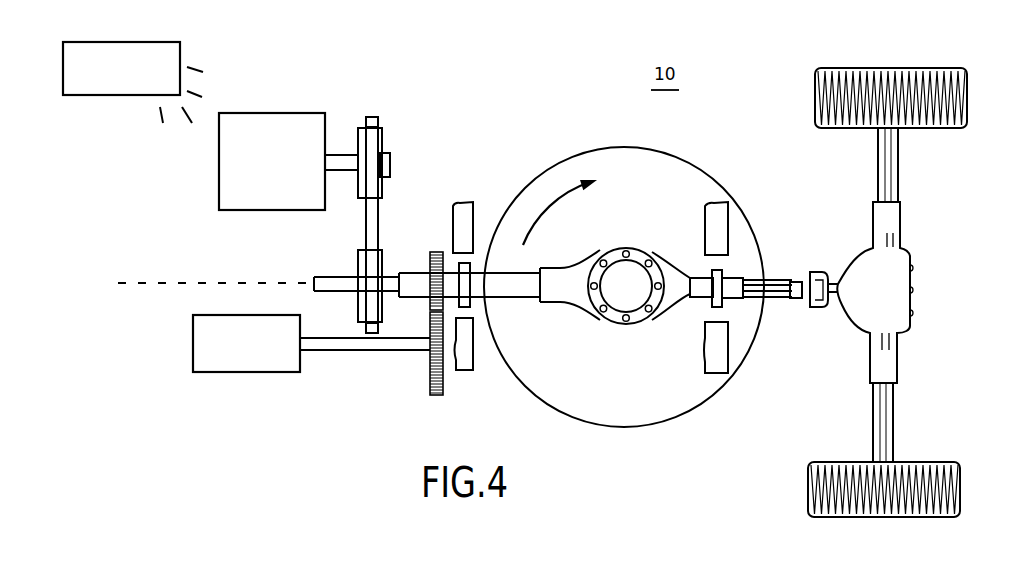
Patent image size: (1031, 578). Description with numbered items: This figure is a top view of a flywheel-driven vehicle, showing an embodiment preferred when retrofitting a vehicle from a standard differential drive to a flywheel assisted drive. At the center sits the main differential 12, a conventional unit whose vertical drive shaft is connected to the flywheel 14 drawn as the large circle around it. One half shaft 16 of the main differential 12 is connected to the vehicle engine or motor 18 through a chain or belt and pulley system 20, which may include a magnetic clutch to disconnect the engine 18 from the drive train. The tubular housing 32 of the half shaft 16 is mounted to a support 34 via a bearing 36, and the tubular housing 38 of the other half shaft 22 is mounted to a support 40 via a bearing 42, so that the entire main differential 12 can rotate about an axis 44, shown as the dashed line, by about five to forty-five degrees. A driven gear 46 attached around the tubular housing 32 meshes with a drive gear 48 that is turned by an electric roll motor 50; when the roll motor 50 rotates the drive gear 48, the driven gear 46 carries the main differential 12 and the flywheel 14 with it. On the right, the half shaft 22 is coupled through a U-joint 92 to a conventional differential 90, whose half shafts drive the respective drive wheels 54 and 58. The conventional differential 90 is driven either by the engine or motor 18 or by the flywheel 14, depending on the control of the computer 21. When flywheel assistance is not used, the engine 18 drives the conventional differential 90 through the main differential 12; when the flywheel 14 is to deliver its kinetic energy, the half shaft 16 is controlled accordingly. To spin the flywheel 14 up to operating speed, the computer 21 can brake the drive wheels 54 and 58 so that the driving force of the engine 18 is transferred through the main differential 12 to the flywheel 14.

The main differential 12 is at (640, 325).
The flywheel 14 is at (690, 172).
The half shaft 16 is at (390, 282).
The engine 18 is at (305, 113).
The pulley system 20 is at (393, 128).
The computer 21 is at (164, 42).
The half shaft 22 is at (778, 278).
The tubular housing 32 is at (422, 297).
The support 34 is at (475, 212).
The bearing 36 is at (476, 330).
The tubular housing 38 is at (697, 298).
The support 40 is at (733, 323).
The bearing 42 is at (722, 290).
The axis 44 is at (185, 283).
The driven gear 46 is at (436, 252).
The drive gear 48 is at (436, 397).
The roll motor 50 is at (247, 372).
The drive wheel 54 is at (945, 70).
The drive wheel 58 is at (903, 518).
The conventional differential 90 is at (910, 252).
The U-joint 92 is at (818, 310).